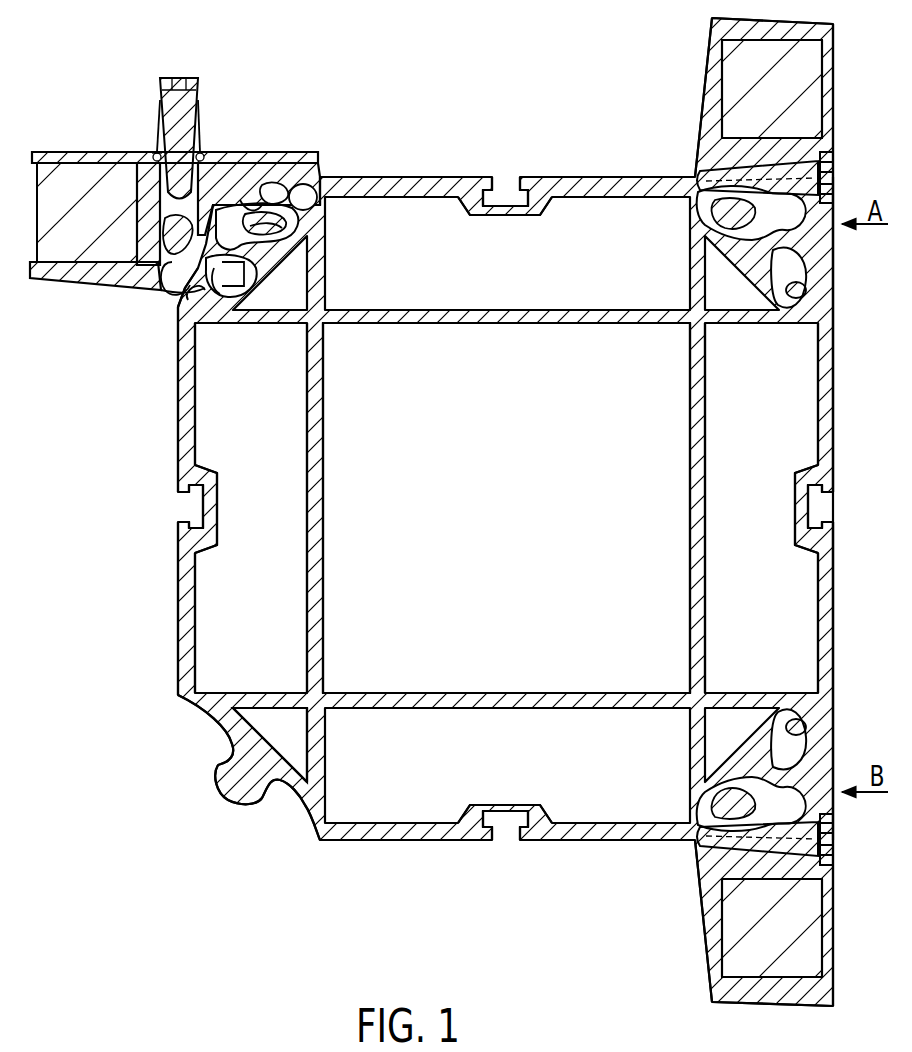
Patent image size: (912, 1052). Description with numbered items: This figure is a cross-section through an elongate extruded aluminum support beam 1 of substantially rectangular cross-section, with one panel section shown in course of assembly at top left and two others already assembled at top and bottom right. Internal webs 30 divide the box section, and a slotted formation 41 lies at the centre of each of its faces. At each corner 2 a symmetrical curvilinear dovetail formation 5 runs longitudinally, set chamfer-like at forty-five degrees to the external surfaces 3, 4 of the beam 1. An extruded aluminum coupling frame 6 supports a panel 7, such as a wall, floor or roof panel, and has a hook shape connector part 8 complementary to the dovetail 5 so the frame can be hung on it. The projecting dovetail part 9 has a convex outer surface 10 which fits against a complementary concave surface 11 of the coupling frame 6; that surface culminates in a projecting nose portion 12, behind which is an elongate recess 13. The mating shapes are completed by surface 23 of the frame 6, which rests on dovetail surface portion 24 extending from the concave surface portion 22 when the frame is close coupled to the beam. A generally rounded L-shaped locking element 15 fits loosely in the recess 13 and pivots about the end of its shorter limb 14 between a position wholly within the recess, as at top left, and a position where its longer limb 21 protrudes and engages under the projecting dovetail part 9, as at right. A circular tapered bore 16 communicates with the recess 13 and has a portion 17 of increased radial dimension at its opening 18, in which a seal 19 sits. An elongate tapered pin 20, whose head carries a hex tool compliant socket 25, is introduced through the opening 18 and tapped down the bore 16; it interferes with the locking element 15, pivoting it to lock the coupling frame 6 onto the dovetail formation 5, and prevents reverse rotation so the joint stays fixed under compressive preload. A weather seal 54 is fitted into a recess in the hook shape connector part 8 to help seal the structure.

The support beam 1 is at (152, 630).
The corner 2 is at (200, 720).
The external surface 3 is at (178, 425).
The external surface 4 is at (593, 177).
The dovetail formation 5 is at (236, 802).
The coupling frame 6 is at (72, 128).
The panel 7 is at (52, 180).
The hook shape connector part 8 is at (270, 195).
The projecting dovetail part 9 is at (275, 242).
The convex outer surface 10 is at (257, 255).
The concave surface 11 is at (248, 200).
The nose portion 12 is at (272, 220).
The recess 13 is at (233, 300).
The shorter limb 14 is at (163, 222).
The locking element 15 is at (172, 262).
The tapered bore 16 is at (153, 160).
The portion of increased radial dimension 17 is at (152, 153).
The opening 18 is at (198, 143).
The seal 19 is at (205, 158).
The tapered pin 20 is at (157, 100).
The longer limb 21 is at (185, 272).
The concave surface portion 22 is at (252, 290).
The surface 23 is at (208, 300).
The dovetail surface portion 24 is at (186, 305).
The hex tool compliant socket 25 is at (178, 78).
The web 30 is at (505, 322).
The slotted formation 41 is at (506, 193).
The weather seal 54 is at (320, 190).